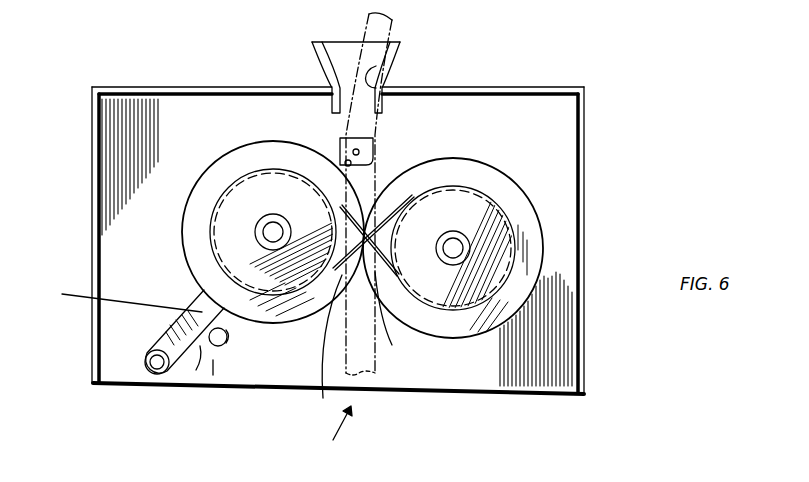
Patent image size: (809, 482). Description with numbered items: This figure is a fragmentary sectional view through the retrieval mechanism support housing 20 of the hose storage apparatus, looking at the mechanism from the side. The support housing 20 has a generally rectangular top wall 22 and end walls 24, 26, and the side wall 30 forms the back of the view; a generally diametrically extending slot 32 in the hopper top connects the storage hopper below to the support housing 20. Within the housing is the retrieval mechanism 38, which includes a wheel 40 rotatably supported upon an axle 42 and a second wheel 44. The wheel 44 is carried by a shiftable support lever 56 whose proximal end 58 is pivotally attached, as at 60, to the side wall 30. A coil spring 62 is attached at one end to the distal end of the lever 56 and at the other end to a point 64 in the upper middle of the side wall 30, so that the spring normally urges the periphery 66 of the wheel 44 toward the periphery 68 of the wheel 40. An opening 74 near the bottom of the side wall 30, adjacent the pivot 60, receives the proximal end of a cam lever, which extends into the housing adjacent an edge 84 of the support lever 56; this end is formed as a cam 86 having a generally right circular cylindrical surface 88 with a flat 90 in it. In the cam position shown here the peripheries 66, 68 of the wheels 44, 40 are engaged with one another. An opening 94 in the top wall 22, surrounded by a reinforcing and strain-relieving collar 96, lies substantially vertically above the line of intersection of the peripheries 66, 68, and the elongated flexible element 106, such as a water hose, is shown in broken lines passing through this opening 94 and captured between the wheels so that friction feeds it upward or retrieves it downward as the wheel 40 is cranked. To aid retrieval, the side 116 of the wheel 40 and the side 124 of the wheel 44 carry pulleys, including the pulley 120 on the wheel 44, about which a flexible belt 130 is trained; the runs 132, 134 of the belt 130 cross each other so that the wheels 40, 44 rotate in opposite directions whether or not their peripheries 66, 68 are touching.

The retrieval mechanism support housing 20 is at (528, 76).
The top wall 22 is at (205, 86).
The end wall 24 is at (590, 274).
The end wall 26 is at (92, 203).
The side wall 30 is at (529, 123).
The slot 32 is at (335, 434).
The retrieval mechanism 38 is at (134, 247).
The wheel 40 is at (453, 323).
The axle 42 is at (450, 232).
The wheel 44 is at (293, 316).
The shiftable support lever 56 is at (185, 313).
The proximal end 58 is at (160, 344).
The pivot point 60 is at (143, 356).
The coil spring 62 is at (338, 162).
The point 64 is at (376, 140).
The periphery 66 is at (180, 218).
The periphery 68 is at (466, 140).
The opening 74 is at (220, 346).
The edge 84 is at (196, 370).
The cam 86 is at (213, 354).
The cylindrical surface 88 is at (228, 338).
The flat 90 is at (117, 296).
The opening 94 is at (382, 70).
The collar 96 is at (318, 62).
The elongated flexible element 106 is at (396, 26).
The side 116 is at (483, 172).
The pulley 120 is at (213, 195).
The side 124 is at (248, 155).
The flexible belt 130 is at (376, 163).
The belt run 132 is at (379, 285).
The belt run 134 is at (329, 344).